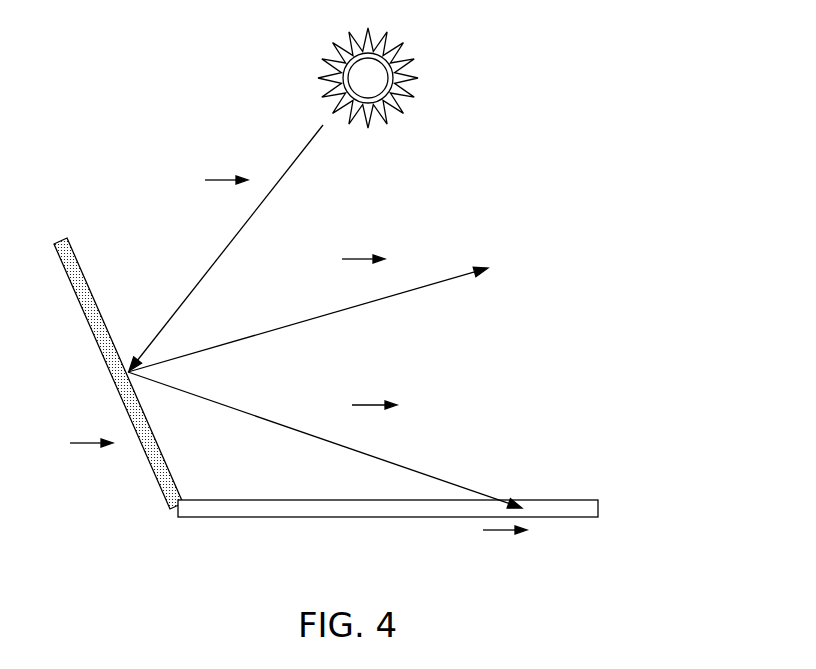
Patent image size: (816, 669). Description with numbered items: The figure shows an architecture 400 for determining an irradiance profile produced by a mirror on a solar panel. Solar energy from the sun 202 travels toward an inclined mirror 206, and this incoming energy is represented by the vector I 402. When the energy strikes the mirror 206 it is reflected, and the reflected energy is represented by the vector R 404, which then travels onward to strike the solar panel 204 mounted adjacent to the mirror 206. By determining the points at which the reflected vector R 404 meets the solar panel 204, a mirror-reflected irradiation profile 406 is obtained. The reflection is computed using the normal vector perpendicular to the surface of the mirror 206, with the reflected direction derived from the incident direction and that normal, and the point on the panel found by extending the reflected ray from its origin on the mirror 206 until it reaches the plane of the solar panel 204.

The architecture 400 is at (533, 65).
The sun 202 is at (375, 87).
The mirror 206 is at (70, 242).
The solar panel 204 is at (573, 517).
The vector I 402 is at (211, 208).
The vector R 404 is at (388, 431).
The mirror-reflected irradiation profile 406 is at (485, 556).